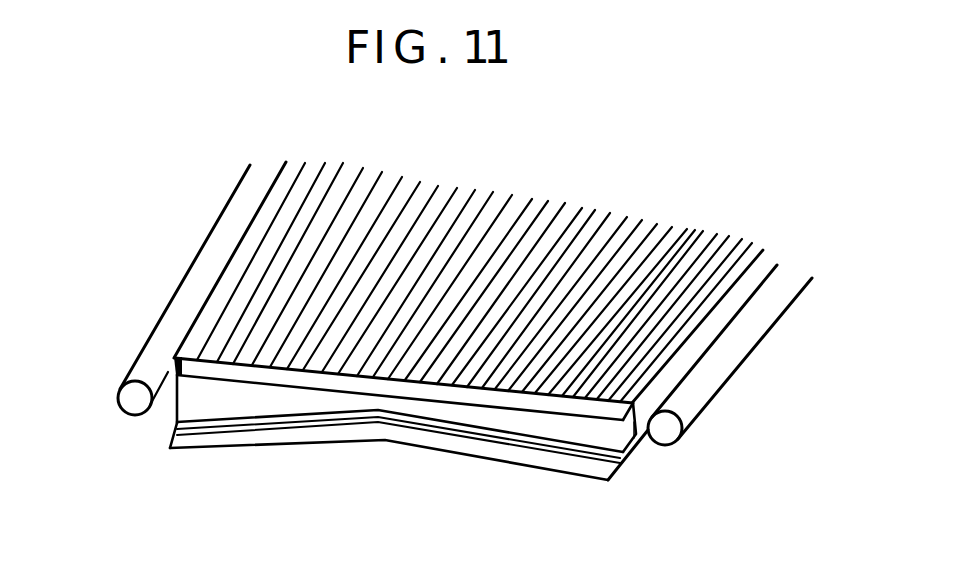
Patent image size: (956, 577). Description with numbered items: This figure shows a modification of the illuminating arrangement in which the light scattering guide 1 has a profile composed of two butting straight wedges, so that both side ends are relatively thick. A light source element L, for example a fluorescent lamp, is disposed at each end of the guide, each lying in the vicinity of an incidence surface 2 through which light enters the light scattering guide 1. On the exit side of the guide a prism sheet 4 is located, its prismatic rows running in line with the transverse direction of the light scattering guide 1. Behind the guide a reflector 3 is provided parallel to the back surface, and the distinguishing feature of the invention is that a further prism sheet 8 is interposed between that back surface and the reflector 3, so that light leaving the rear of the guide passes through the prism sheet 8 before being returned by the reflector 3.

The light scattering guide 1 is at (260, 400).
The incidence surface 2 is at (188, 392).
The reflector 3 is at (202, 443).
The prism sheet 4 is at (685, 230).
The prism sheet 8 is at (542, 448).
The light source element L is at (183, 300).